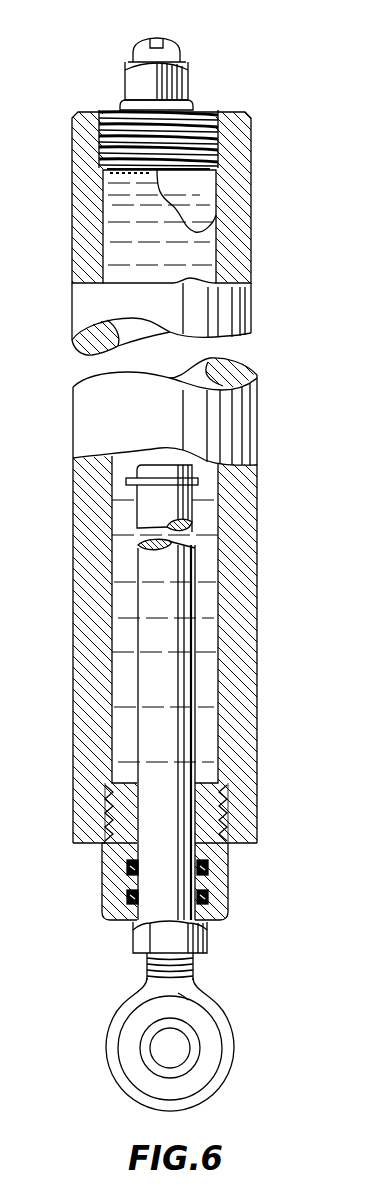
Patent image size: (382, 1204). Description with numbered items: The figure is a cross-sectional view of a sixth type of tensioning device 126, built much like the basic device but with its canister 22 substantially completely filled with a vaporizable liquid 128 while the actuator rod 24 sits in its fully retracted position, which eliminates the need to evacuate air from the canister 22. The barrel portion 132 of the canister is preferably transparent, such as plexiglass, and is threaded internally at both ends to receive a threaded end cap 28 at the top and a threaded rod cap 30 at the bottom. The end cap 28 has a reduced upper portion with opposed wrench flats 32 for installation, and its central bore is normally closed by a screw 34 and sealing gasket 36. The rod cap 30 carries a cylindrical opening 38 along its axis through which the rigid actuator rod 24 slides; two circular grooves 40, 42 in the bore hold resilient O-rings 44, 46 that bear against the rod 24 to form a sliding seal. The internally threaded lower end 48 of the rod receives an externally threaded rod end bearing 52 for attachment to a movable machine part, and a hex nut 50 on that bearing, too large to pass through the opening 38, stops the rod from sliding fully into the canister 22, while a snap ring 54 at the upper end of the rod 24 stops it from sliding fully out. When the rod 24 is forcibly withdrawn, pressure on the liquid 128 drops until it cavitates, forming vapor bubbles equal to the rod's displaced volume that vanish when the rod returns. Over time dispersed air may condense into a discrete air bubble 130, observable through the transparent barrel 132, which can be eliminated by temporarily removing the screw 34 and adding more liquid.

The canister 22 is at (266, 734).
The actuator rod 24 is at (146, 706).
The threaded end cap 28 is at (118, 118).
The threaded rod cap 30 is at (222, 857).
The wrench flats 32 is at (140, 80).
The screw 34 is at (138, 44).
The sealing gasket 36 is at (182, 64).
The opening 38 is at (212, 818).
The groove 40 is at (209, 868).
The groove 42 is at (209, 898).
The O-ring 44 is at (127, 868).
The O-ring 46 is at (127, 898).
The lower end of the actuator rod 48 is at (195, 968).
The hex nut 50 is at (206, 947).
The rod end bearing 52 is at (232, 1032).
The snap ring 54 is at (127, 478).
The tensioning device 126 is at (243, 98).
The vaporizable liquid 128 is at (116, 240).
The air bubble 130 is at (197, 190).
The barrel portion 132 is at (242, 512).